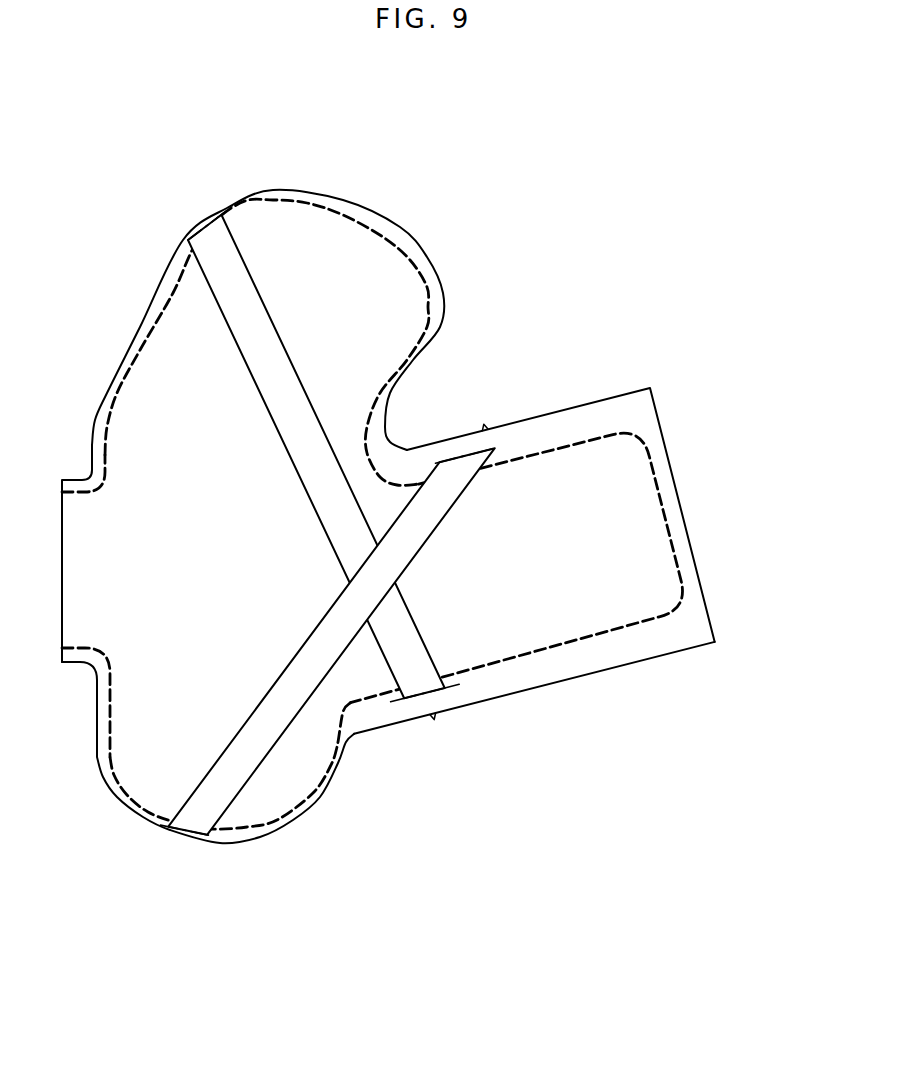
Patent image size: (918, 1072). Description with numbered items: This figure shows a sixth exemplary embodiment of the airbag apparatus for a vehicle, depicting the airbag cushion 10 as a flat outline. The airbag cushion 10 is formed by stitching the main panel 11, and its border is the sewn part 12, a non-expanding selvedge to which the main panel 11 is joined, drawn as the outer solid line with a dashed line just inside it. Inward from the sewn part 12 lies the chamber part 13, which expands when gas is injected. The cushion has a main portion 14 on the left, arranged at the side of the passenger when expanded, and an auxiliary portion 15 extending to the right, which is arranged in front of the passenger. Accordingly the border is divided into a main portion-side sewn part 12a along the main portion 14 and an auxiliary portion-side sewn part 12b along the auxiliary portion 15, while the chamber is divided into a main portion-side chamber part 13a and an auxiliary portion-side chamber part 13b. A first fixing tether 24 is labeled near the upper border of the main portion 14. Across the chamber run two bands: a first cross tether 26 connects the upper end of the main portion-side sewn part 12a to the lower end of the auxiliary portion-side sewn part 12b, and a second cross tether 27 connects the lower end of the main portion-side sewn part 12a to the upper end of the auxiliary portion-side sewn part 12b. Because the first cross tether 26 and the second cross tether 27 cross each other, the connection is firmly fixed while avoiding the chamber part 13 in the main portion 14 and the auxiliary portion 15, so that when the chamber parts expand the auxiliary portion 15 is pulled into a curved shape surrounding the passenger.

The airbag cushion 10 is at (423, 507).
The main panel 11 is at (405, 232).
The sewn part 12 is at (388, 783).
The main portion-side sewn part 12a is at (133, 805).
The auxiliary portion-side sewn part 12b is at (613, 633).
The chamber part 13 is at (423, 419).
The main portion-side chamber part 13a is at (323, 283).
The auxiliary portion-side chamber part 13b is at (595, 545).
The main portion 14 is at (190, 392).
The auxiliary portion 15 is at (592, 559).
The first fixing tether 24 is at (387, 308).
The first cross tether 26 is at (222, 255).
The second cross tether 27 is at (245, 763).